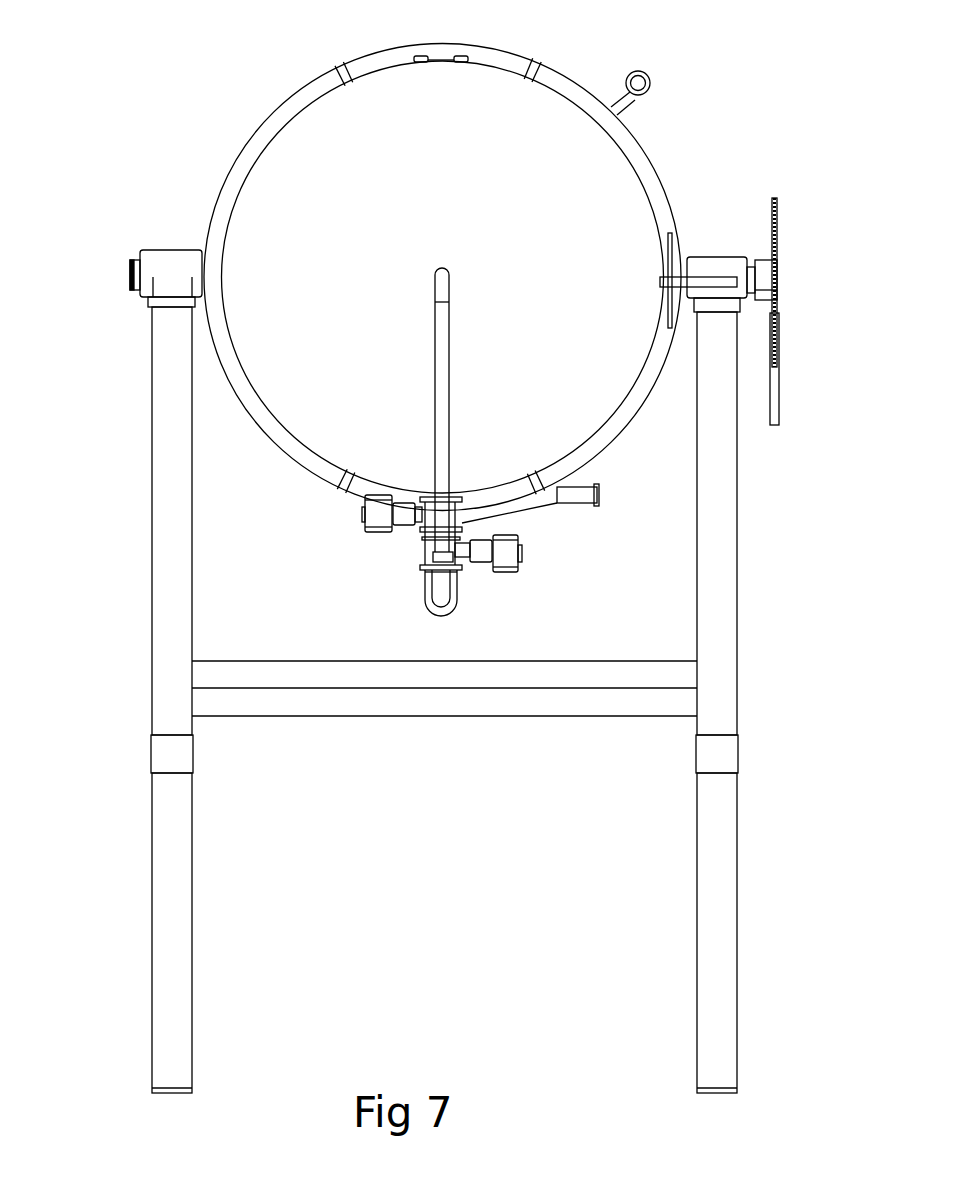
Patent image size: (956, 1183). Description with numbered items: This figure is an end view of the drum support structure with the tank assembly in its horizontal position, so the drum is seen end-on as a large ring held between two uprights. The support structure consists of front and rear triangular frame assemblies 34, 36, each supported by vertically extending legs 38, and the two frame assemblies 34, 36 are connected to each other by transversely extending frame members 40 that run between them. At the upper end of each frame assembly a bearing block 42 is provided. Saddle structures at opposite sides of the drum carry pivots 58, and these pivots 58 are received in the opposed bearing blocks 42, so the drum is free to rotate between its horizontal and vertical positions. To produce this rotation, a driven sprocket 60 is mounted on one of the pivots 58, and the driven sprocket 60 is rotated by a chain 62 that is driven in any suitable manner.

The front triangular frame assembly 34 is at (188, 625).
The rear triangular frame assembly 36 is at (737, 672).
The vertically extending legs 38 is at (185, 990).
The transversely extending frame members 40 is at (447, 718).
The bearing block 42 is at (165, 247).
The pivots 58 is at (130, 278).
The driven sprocket 60 is at (782, 215).
The chain 62 is at (785, 410).